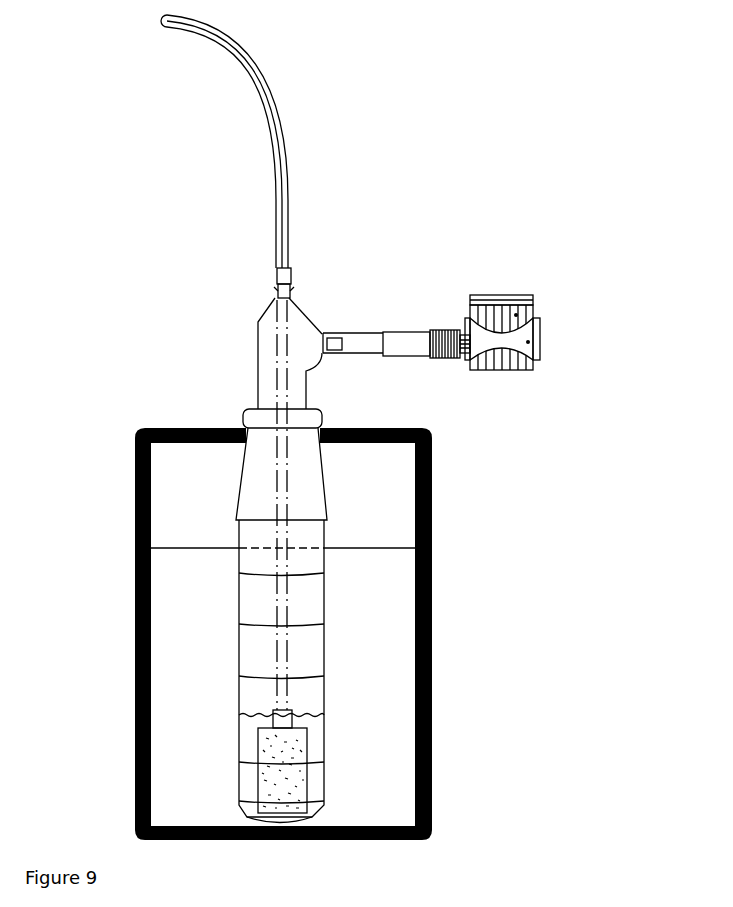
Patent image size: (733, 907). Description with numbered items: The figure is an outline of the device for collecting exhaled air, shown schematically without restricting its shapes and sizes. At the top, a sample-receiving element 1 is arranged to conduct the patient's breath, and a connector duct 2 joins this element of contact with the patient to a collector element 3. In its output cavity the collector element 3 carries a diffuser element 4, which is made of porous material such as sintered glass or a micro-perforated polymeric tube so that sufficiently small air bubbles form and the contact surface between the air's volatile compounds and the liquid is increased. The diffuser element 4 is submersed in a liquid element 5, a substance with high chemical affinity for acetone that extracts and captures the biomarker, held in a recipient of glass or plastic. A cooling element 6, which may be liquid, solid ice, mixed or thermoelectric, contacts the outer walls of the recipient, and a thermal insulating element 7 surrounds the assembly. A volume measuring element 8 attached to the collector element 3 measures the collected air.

The sample-receiving element 1 is at (274, 133).
The connector duct 2 is at (279, 274).
The collector element 3 is at (258, 353).
The diffuser element 4 is at (257, 791).
The liquid element 5 is at (253, 716).
The cooling element 6 is at (203, 740).
The thermal insulating element 7 is at (432, 762).
The volume measuring element 8 is at (527, 340).